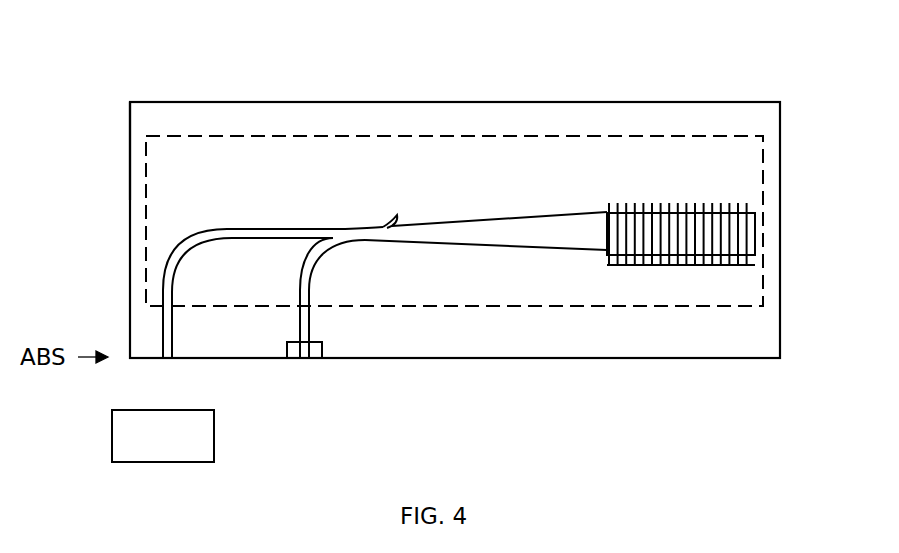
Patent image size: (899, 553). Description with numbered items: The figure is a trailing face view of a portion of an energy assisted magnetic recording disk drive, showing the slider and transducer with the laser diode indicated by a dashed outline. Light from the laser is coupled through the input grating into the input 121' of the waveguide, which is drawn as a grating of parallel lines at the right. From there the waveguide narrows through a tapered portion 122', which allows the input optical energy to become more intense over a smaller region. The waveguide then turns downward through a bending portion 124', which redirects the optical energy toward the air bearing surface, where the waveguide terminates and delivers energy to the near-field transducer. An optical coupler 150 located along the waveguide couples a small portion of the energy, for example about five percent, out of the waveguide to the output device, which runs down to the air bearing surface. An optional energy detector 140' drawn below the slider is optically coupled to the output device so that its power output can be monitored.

The bending portion 124' is at (287, 321).
The optical coupler 150 is at (353, 220).
The tapered portion 122' is at (509, 161).
The input 121' is at (682, 168).
The energy detector 140' is at (203, 451).